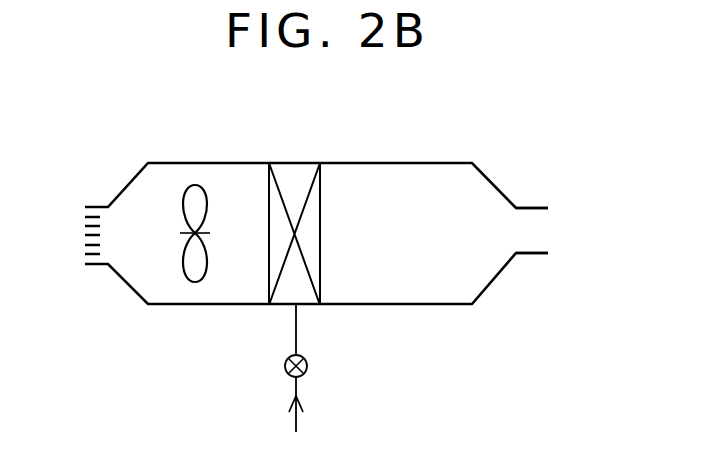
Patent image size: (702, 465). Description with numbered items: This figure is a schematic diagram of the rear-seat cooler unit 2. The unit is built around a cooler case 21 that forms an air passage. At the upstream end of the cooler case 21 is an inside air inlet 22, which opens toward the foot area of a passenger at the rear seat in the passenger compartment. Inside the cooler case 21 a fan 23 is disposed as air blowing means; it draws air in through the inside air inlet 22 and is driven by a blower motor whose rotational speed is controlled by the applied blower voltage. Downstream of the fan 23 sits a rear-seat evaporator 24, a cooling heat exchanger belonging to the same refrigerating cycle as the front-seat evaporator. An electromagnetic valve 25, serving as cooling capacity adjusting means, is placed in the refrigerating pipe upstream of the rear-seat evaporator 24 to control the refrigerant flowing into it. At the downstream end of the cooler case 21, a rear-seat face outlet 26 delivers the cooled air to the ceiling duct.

The rear-seat cooler unit 2 is at (100, 155).
The cooler case 21 is at (370, 162).
The inside air inlet 22 is at (80, 237).
The fan 23 is at (205, 200).
The rear-seat evaporator 24 is at (294, 162).
The electromagnetic valve 25 is at (284, 368).
The rear-seat face outlet 26 is at (547, 230).